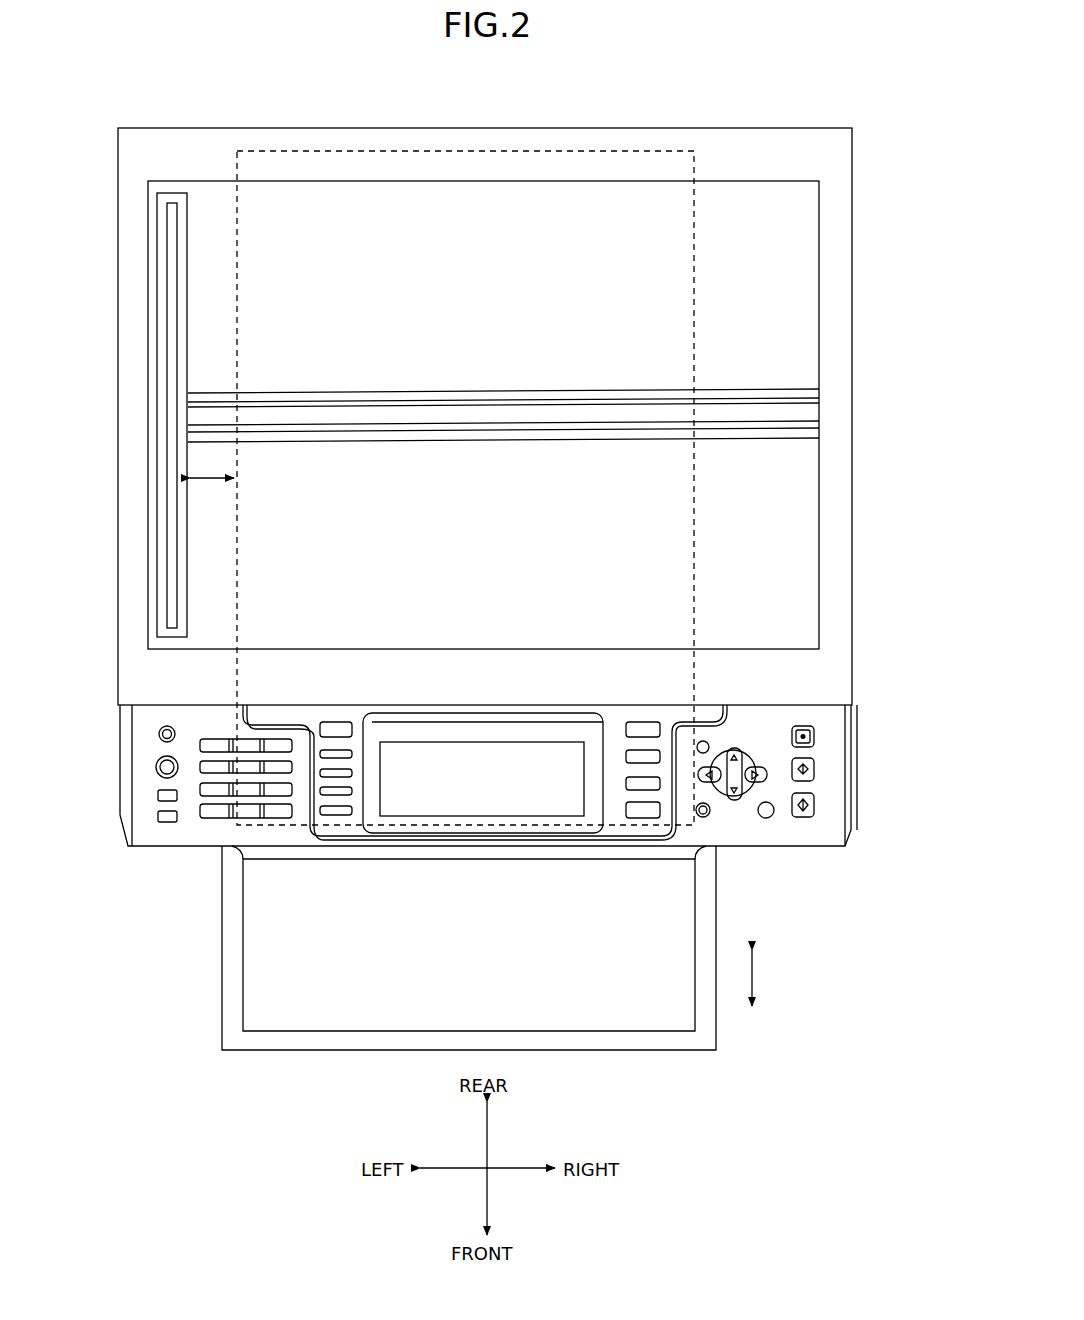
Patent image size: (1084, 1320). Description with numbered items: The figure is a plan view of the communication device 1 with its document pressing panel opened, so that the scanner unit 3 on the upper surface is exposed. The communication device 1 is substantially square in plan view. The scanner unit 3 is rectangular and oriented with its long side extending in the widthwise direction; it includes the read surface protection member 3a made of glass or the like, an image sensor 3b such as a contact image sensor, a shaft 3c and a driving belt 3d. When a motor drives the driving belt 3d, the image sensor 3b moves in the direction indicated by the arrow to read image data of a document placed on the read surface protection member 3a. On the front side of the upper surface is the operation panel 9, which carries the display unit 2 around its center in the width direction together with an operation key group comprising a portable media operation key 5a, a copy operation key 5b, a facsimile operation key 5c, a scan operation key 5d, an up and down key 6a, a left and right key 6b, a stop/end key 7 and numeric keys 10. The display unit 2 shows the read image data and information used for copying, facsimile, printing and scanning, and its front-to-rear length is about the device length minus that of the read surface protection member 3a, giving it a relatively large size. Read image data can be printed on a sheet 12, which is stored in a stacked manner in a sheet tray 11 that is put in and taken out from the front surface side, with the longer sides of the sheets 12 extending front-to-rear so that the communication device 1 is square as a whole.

The communication device 1 is at (636, 92).
The display unit 2 is at (452, 797).
The scanner unit 3 is at (831, 240).
The read surface protection member 3a is at (800, 317).
The image sensor 3b is at (152, 427).
The shaft 3c is at (803, 385).
The driving belt 3d is at (803, 414).
The portable media operation key 5a is at (632, 727).
The copy operation key 5b is at (657, 755).
The facsimile operation key 5c is at (658, 784).
The scan operation key 5d is at (640, 812).
The up and down key 6a is at (709, 768).
The left and right key 6b is at (708, 782).
The stop/end key 7 is at (812, 733).
The operation panel 9 is at (836, 768).
The numeric keys 10 is at (220, 792).
The sheet tray 11 is at (712, 1035).
The sheet 12 is at (698, 165).